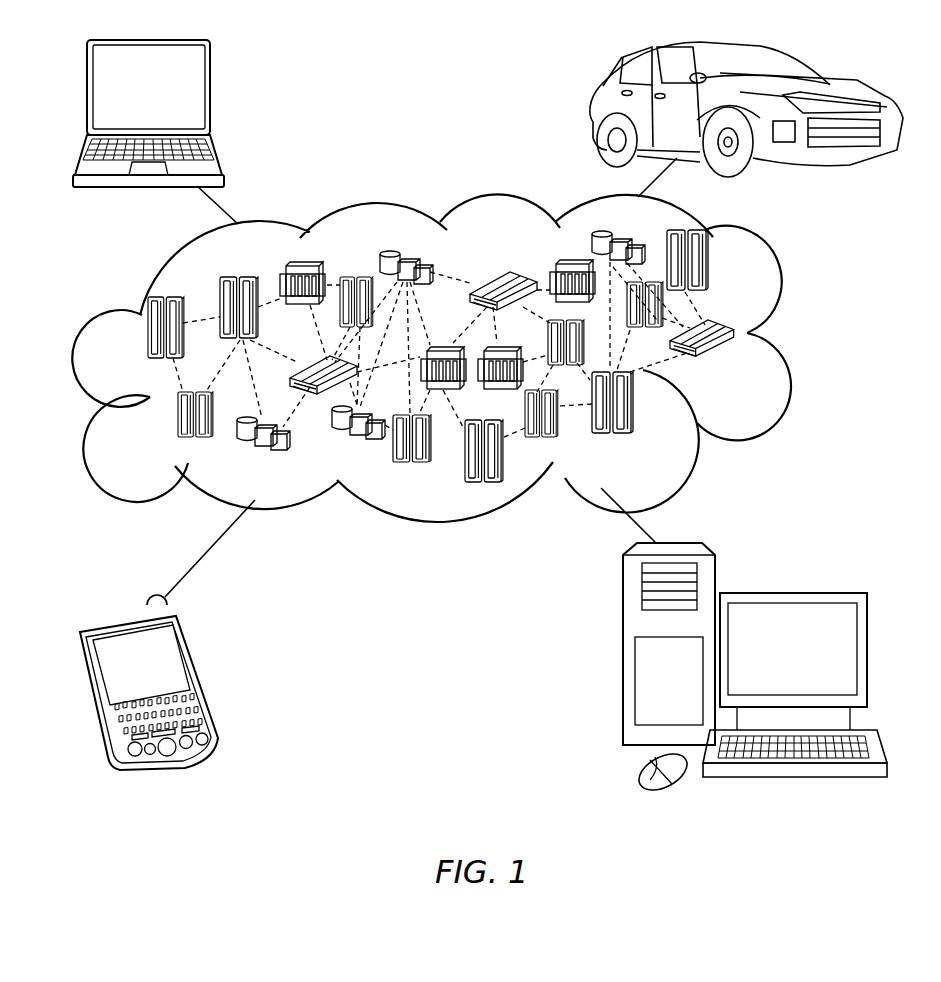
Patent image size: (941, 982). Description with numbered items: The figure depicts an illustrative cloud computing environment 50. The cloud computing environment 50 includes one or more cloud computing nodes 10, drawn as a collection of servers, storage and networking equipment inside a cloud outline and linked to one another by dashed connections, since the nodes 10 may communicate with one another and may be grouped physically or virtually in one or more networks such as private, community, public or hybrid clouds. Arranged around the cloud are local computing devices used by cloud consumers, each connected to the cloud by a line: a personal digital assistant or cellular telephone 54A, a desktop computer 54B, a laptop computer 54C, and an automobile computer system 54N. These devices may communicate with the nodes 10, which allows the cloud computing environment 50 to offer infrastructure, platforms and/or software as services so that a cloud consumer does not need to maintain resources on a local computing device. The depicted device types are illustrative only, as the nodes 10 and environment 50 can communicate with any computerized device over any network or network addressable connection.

The cloud computing nodes 10 is at (742, 366).
The cloud computing environment 50 is at (788, 337).
The personal digital assistant (PDA) or cellular telephone 54A is at (203, 677).
The desktop computer 54B is at (792, 592).
The laptop computer 54C is at (212, 93).
The automobile computer system 54N is at (595, 110).